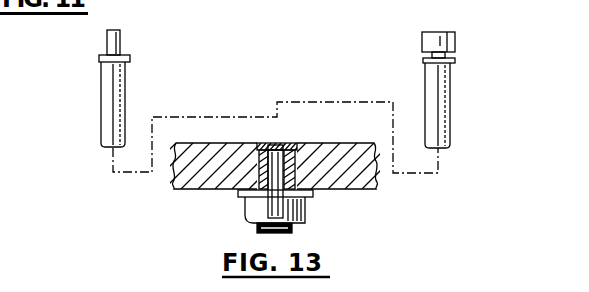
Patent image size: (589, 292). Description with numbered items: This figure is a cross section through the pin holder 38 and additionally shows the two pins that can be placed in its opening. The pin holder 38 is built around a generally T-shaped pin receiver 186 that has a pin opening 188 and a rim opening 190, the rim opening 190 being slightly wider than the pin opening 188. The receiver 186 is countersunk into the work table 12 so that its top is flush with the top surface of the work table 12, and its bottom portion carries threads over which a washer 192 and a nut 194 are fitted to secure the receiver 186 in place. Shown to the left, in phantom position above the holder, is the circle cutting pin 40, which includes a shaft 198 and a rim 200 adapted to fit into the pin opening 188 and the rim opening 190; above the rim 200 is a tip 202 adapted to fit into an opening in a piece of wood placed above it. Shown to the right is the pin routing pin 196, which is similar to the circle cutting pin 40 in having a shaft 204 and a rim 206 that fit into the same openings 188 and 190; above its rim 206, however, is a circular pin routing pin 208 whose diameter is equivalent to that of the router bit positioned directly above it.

The work table 12 is at (333, 148).
The pin holder 38 is at (274, 54).
The circle cutting pin 40 is at (102, 85).
The pin receiver 186 is at (265, 143).
The pin opening 188 is at (283, 144).
The rim opening 190 is at (289, 147).
The washer 192 is at (313, 194).
The nut 194 is at (305, 215).
The pin routing pin 196 is at (414, 75).
The shaft 198 is at (108, 120).
The rim 200 is at (99, 58).
The tip 202 is at (121, 42).
The shaft 204 is at (432, 97).
The rim 206 is at (423, 60).
The pin routing pin 208 is at (432, 16).